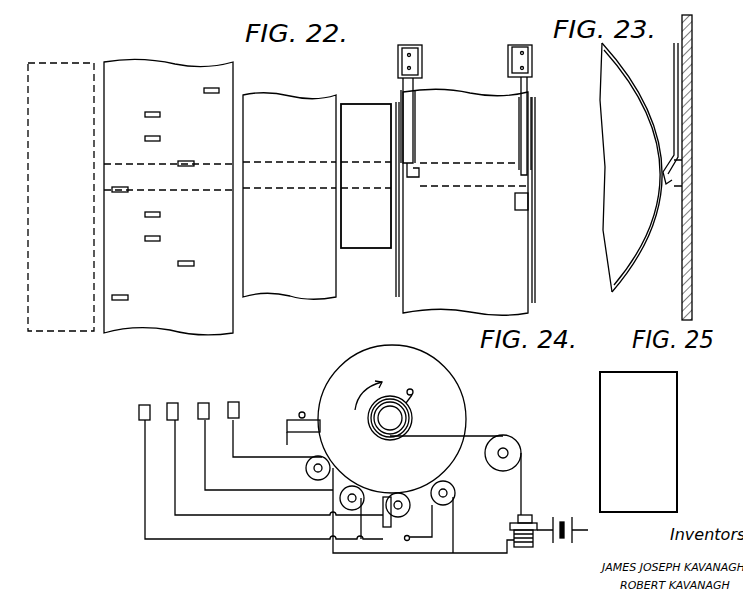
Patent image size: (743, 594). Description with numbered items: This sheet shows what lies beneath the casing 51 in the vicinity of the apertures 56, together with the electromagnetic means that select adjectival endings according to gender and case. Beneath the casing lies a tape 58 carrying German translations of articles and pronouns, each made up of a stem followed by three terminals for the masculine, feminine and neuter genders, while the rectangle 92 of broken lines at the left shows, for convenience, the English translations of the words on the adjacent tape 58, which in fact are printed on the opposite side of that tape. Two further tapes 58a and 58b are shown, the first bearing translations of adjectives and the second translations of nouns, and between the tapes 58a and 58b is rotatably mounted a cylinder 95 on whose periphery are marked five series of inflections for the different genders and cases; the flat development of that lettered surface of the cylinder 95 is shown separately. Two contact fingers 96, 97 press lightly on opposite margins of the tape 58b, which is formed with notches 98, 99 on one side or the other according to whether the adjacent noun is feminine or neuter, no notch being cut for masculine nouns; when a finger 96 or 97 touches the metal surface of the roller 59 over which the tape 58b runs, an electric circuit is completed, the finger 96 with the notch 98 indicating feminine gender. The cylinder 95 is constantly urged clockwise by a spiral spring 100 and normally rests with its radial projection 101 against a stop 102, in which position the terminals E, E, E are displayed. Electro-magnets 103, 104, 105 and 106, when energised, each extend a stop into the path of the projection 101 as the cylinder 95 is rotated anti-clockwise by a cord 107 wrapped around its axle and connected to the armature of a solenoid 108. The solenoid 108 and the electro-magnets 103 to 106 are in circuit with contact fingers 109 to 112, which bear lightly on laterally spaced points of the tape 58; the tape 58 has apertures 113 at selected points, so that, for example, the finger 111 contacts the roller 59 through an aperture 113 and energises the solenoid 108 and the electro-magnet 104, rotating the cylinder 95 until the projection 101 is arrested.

In FIG. 23, the casing 51 is at (686, 280).
In FIG. 23, the aperture 56 is at (682, 187).
In FIG. 22, the tape 58 is at (128, 75).
In FIG. 22, the tape 58a is at (278, 112).
In FIG. 22, the tape 58b is at (422, 305).
In FIG. 22, the roller 59 is at (536, 170).
In FIG. 23, the roller 59 is at (608, 83).
In FIG. 22, the rectangle of broken lines 92 is at (43, 327).
In FIG. 22, the cylinder 95 is at (357, 240).
In FIG. 24, the cylinder 95 is at (405, 365).
In FIG. 25, the cylinder 95 is at (602, 395).
In FIG. 22, the contact finger 96 is at (412, 118).
In FIG. 23, the contact finger 96 is at (677, 100).
In FIG. 22, the contact finger 97 is at (523, 130).
In FIG. 22, the notch 98 is at (408, 177).
In FIG. 22, the notch 99 is at (518, 210).
In FIG. 24, the spiral spring 100 is at (415, 412).
In FIG. 24, the radial projection 101 is at (387, 527).
In FIG. 24, the stop 102 is at (302, 418).
In FIG. 24, the electro-magnet 103 is at (306, 468).
In FIG. 24, the electro-magnet 104 is at (340, 498).
In FIG. 24, the electro-magnet 105 is at (404, 516).
In FIG. 24, the electro-magnet 106 is at (455, 493).
In FIG. 24, the cord 107 is at (482, 433).
In FIG. 24, the solenoid 108 is at (530, 547).
In FIG. 24, the contact finger 109 is at (143, 419).
In FIG. 24, the contact finger 110 is at (167, 420).
In FIG. 24, the contact finger 111 is at (200, 420).
In FIG. 24, the contact finger 112 is at (238, 408).
In FIG. 22, the aperture 113 is at (147, 113).